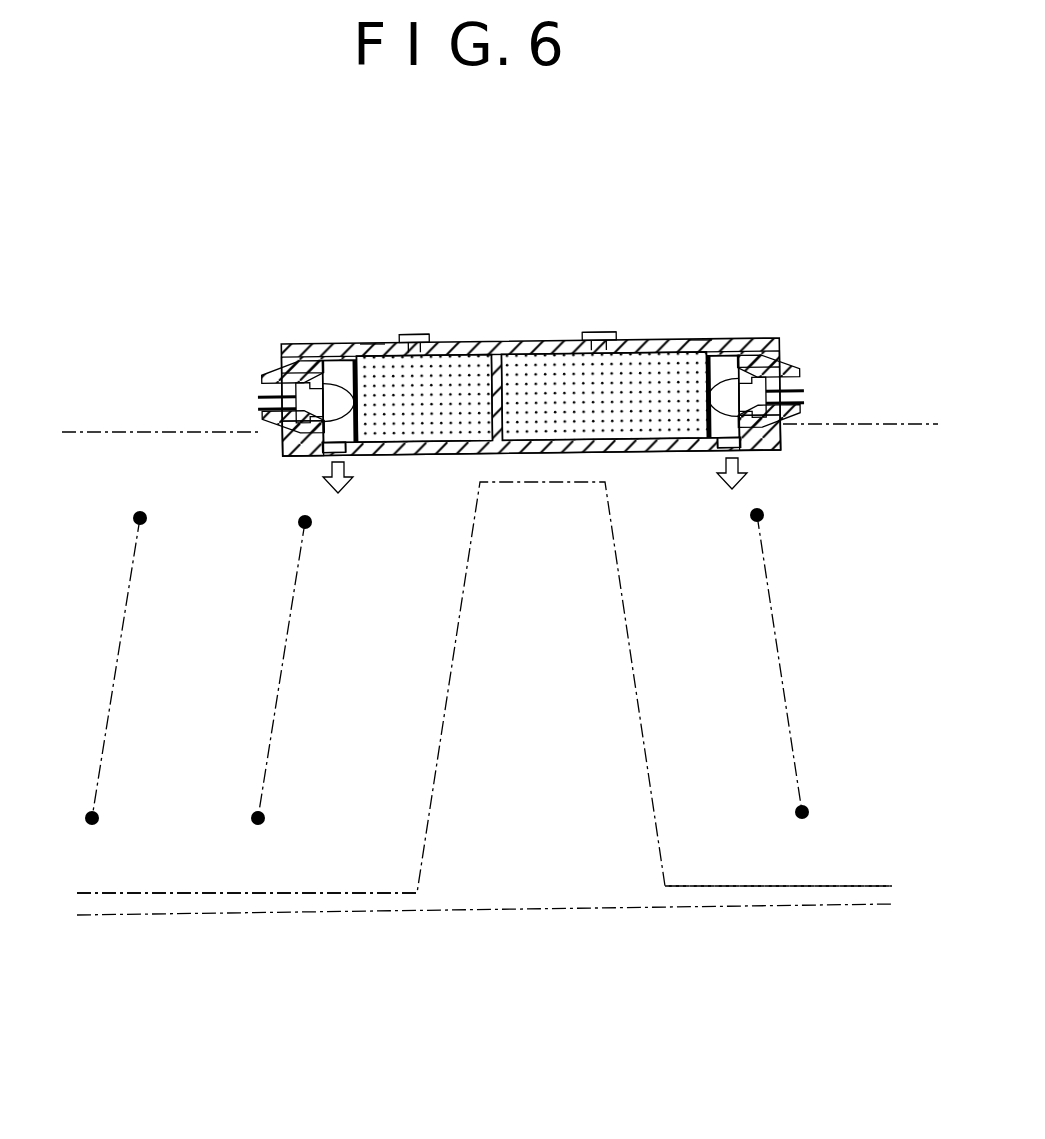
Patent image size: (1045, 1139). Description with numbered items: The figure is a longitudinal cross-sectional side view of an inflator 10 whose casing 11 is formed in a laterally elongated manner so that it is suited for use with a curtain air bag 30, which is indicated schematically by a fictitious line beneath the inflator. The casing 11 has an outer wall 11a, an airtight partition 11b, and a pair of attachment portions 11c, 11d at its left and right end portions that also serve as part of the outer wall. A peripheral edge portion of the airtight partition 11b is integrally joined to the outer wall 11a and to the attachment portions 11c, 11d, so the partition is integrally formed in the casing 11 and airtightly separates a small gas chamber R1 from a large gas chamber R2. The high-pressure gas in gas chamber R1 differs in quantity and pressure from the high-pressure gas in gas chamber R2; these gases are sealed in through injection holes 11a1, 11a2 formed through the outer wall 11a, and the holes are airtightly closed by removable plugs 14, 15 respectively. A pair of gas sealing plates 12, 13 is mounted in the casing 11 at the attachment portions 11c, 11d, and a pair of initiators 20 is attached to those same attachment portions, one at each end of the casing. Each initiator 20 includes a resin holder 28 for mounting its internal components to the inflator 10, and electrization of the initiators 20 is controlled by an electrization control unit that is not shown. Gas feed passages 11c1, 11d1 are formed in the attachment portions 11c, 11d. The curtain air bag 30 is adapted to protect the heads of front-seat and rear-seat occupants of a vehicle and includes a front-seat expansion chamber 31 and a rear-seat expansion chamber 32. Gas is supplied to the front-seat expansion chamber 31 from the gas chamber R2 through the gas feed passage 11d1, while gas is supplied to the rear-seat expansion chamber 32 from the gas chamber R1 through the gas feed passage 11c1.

The inflator 10 is at (509, 310).
The casing 11 is at (665, 341).
The outer wall 11a is at (473, 447).
The airtight partition 11b is at (508, 396).
The injection hole 11a1 is at (415, 335).
The injection hole 11a2 is at (597, 333).
The attachment portion 11c is at (282, 441).
The gas feed passage 11c1 is at (344, 452).
The attachment portion 11d is at (783, 437).
The gas feed passage 11d1 is at (736, 450).
The gas sealing plate 12 is at (362, 436).
The gas sealing plate 13 is at (704, 432).
The plug 14 is at (428, 336).
The plug 15 is at (610, 340).
The initiator 20 is at (266, 361).
The resin holder 28 is at (312, 344).
The gas chamber R1 is at (372, 344).
The gas chamber R2 is at (700, 340).
The curtain air bag 30 is at (512, 908).
The front-seat expansion chamber 31 is at (780, 873).
The rear-seat expansion chamber 32 is at (227, 873).